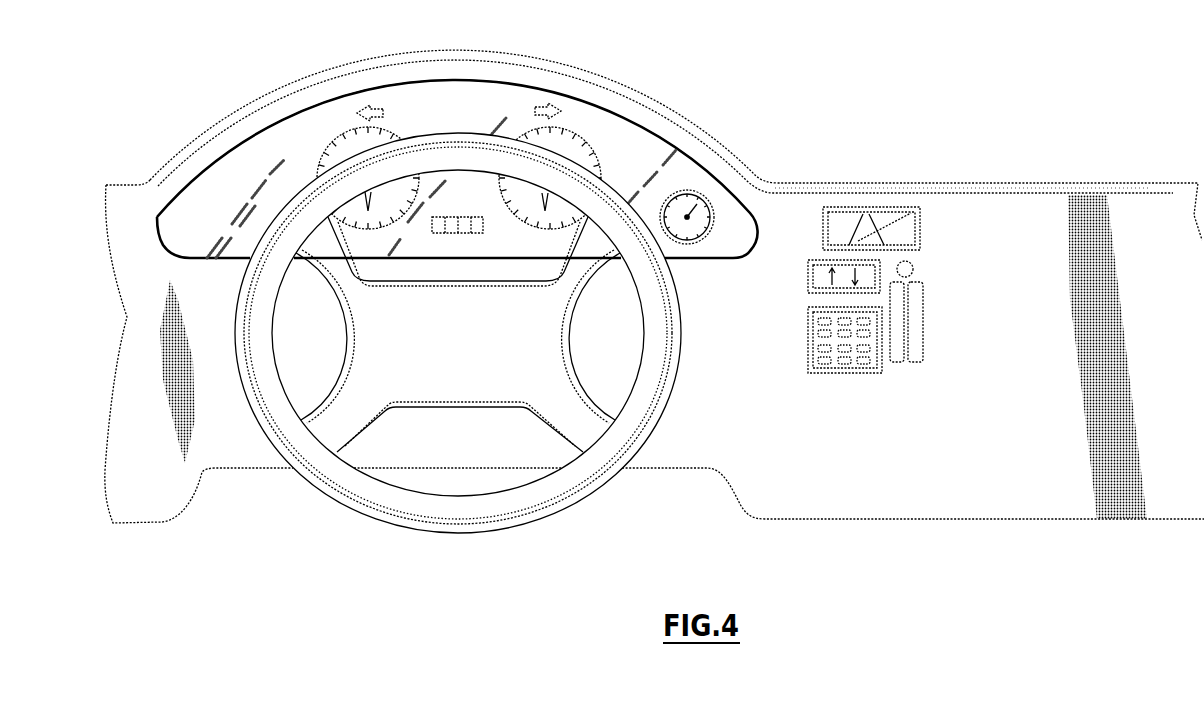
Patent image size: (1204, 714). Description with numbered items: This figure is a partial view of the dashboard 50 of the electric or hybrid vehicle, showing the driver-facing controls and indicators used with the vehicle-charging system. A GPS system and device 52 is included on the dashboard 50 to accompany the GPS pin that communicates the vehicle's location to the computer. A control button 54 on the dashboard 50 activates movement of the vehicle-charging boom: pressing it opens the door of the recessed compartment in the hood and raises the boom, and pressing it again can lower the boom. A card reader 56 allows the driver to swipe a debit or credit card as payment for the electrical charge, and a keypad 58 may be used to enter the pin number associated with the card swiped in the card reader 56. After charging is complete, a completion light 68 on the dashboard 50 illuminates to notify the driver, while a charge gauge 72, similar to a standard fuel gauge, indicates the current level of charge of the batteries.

The dashboard 50 is at (674, 104).
The GPS system and device 52 is at (891, 207).
The control button 54 is at (808, 276).
The card reader 56 is at (925, 318).
The keypad 58 is at (808, 345).
The completion light 68 is at (914, 271).
The charge gauge 72 is at (704, 206).